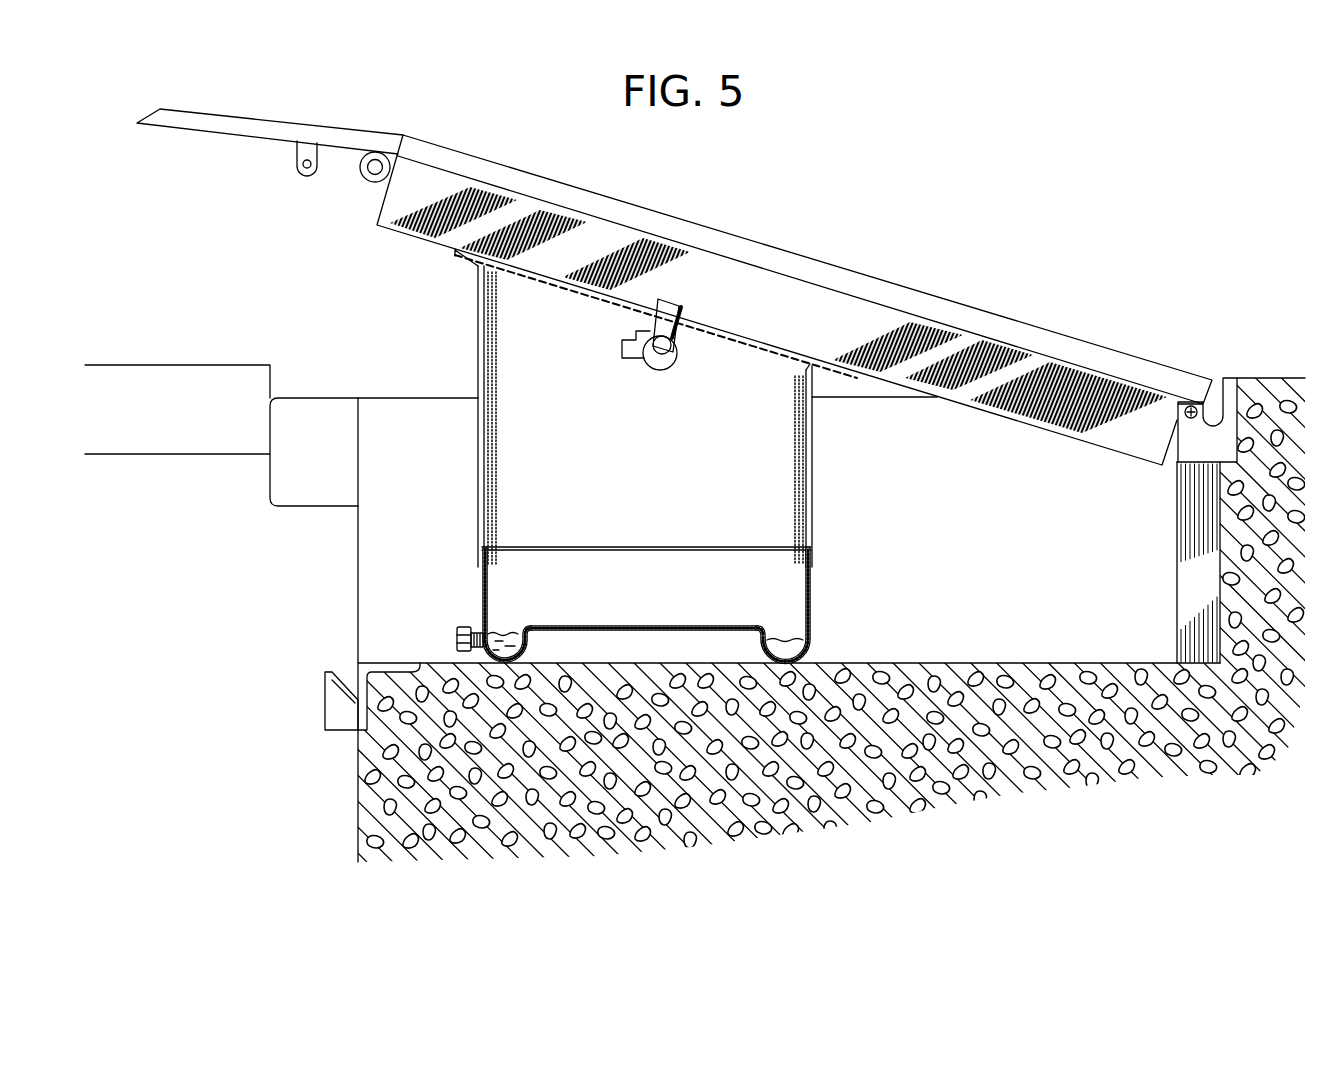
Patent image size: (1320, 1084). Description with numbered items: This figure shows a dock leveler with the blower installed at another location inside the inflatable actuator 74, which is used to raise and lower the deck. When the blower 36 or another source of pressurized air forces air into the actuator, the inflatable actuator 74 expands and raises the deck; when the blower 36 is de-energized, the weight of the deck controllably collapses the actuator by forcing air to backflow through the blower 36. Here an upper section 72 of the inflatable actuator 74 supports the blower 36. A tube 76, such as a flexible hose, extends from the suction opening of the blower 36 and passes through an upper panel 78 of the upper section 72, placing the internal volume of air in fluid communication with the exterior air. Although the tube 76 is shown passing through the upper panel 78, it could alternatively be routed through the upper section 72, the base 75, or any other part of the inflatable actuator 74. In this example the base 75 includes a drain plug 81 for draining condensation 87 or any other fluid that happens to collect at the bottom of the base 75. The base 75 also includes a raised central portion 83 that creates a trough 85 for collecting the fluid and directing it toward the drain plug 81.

The blower 36 is at (653, 372).
The upper section 72 is at (478, 478).
The inflatable actuator 74 is at (902, 527).
The base 75 is at (690, 604).
The tube 76 is at (670, 302).
The upper panel 78 is at (568, 291).
The drain plug 81 is at (457, 632).
The raised central portion 83 is at (662, 623).
The trough 85 is at (787, 650).
The condensation 87 is at (500, 632).